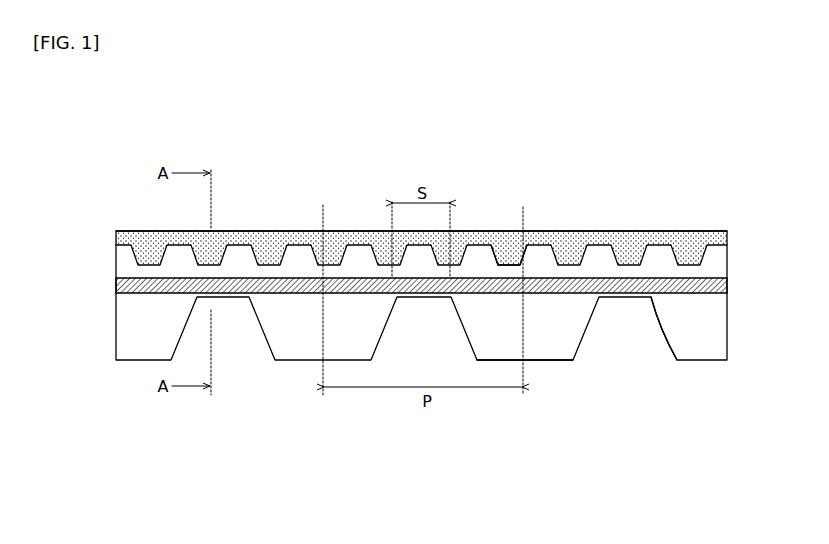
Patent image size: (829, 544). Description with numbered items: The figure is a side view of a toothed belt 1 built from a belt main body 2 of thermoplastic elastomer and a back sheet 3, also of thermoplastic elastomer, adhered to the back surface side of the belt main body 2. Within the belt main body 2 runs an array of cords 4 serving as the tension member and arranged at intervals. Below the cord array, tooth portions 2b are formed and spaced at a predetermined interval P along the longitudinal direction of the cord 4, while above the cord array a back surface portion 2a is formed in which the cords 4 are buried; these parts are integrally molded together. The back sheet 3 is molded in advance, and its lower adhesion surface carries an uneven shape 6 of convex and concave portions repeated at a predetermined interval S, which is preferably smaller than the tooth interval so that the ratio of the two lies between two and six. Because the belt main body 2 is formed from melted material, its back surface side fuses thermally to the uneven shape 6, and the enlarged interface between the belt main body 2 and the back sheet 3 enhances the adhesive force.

The toothed belt 1 is at (584, 143).
The belt main body 2 is at (730, 252).
The back surface portion 2a is at (537, 247).
The tooth portion 2b is at (538, 357).
The back sheet 3 is at (730, 231).
The cord 4 is at (702, 298).
The uneven shape 6 is at (510, 257).